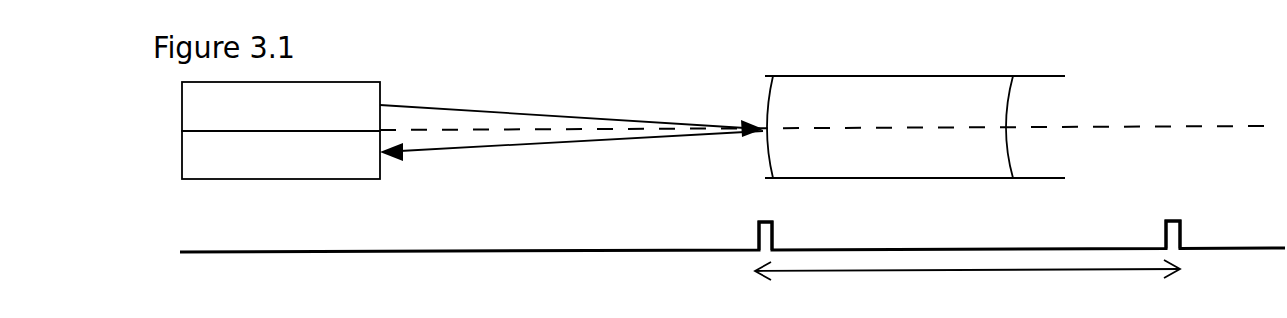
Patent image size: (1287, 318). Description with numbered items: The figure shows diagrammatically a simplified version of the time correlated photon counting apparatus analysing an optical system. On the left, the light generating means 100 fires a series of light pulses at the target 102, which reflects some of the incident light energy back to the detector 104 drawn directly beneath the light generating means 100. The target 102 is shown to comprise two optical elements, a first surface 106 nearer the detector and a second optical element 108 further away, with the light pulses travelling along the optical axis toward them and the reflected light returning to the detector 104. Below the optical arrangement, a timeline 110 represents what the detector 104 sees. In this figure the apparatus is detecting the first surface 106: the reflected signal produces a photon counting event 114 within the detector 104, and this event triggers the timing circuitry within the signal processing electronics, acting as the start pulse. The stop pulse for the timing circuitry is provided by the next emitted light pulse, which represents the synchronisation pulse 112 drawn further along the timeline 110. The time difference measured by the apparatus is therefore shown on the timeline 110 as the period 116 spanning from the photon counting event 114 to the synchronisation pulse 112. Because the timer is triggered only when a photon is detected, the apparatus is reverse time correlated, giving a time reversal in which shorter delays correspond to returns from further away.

The light generating means 100 is at (281, 106).
The detector 104 is at (281, 155).
The target 102 is at (915, 116).
The first surface 106 is at (797, 127).
The second optical element 108 is at (1036, 127).
The timeline 110 is at (732, 236).
The photon counting event 114 is at (750, 235).
The synchronisation pulse 112 is at (1154, 234).
The period 116 is at (967, 286).